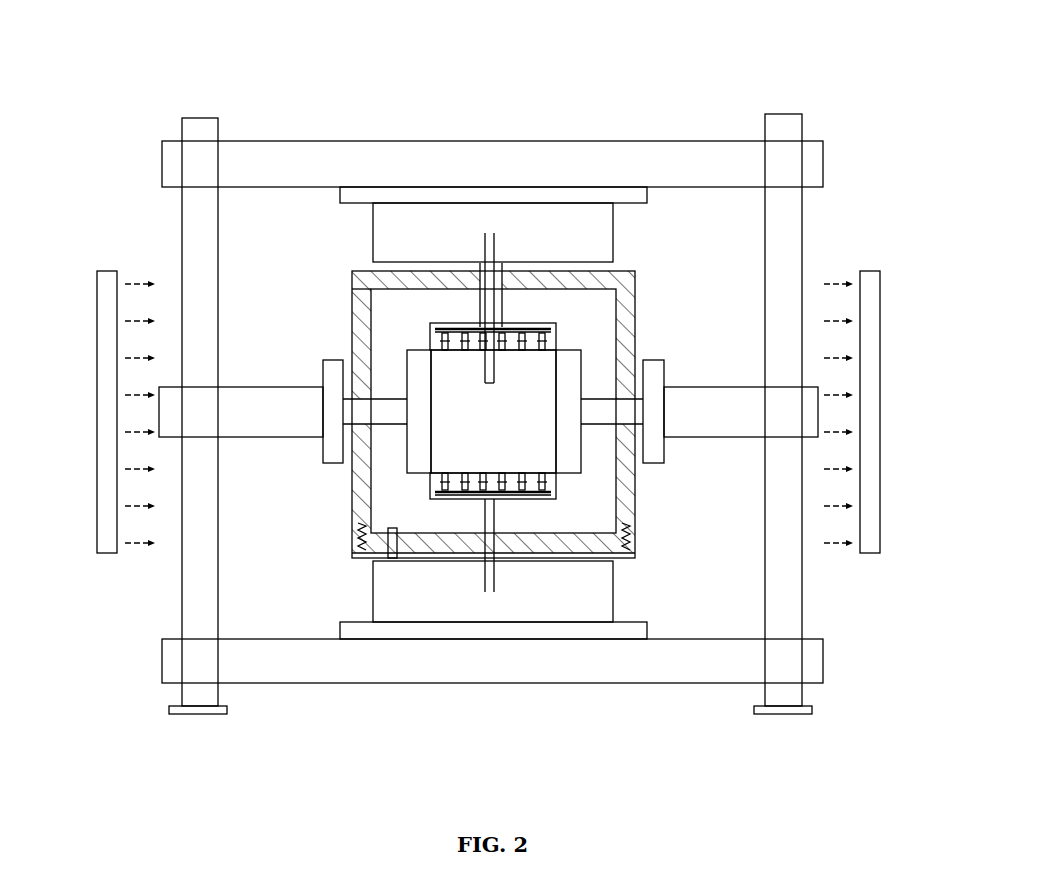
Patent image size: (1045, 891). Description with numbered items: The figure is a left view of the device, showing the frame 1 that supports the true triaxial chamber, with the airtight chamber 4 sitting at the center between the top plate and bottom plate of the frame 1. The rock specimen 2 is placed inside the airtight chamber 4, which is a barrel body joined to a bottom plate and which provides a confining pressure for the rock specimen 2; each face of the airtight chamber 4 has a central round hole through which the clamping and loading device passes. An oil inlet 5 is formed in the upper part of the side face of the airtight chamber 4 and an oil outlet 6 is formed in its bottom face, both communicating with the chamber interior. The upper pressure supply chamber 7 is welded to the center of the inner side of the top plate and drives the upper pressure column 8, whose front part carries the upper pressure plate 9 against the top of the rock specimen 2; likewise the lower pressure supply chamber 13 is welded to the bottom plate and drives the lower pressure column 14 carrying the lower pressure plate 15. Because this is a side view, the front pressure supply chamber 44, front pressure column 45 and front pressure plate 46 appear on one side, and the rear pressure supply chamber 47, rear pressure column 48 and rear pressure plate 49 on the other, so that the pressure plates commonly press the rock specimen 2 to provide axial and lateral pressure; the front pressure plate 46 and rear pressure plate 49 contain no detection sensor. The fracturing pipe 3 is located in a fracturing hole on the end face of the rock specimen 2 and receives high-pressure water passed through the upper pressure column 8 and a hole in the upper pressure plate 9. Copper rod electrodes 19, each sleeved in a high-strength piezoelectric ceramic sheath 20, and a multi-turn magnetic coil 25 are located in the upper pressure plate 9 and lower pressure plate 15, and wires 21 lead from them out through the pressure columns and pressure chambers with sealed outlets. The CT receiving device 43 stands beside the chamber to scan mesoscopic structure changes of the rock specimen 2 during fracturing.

The frame 1 is at (290, 158).
The rock specimen 2 is at (538, 445).
The fracturing pipe 3 is at (486, 370).
The airtight chamber 4 is at (586, 395).
The oil inlet 5 is at (396, 305).
The oil outlet 6 is at (385, 562).
The upper pressure supply chamber 7 is at (392, 292).
The upper pressure column 8 is at (488, 327).
The upper pressure plate 9 is at (502, 285).
The lower pressure supply chamber 13 is at (565, 478).
The lower pressure column 14 is at (500, 500).
The lower pressure plate 15 is at (556, 492).
The copper rod electrode 19 is at (530, 325).
The high-strength piezoelectric ceramic sheath 20 is at (548, 325).
The wire 21 is at (492, 252).
The multi-turn magnetic coil 25 is at (450, 335).
The CT receiving device 43 is at (880, 395).
The front pressure supply chamber 44 is at (235, 437).
The front pressure column 45 is at (407, 425).
The front pressure plate 46 is at (407, 462).
The rear pressure supply chamber 47 is at (743, 387).
The rear pressure column 48 is at (617, 392).
The rear pressure plate 49 is at (578, 372).